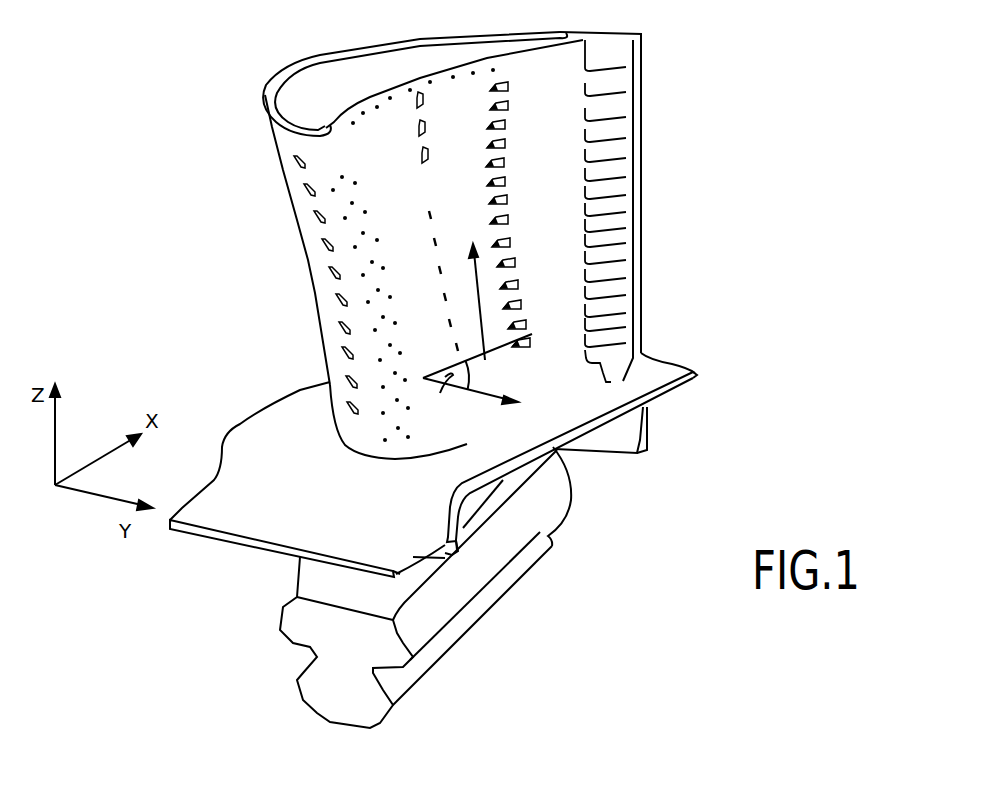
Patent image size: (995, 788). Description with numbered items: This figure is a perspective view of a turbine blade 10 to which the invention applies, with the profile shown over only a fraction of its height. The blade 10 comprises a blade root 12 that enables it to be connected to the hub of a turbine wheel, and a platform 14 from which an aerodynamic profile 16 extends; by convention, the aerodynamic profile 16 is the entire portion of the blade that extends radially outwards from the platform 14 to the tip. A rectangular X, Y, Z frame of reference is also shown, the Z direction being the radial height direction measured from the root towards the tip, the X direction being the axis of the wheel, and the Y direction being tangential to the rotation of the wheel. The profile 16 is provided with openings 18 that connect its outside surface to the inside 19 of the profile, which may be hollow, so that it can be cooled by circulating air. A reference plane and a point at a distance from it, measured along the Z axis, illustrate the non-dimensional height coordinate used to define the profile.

The blade 10 is at (682, 266).
The blade root 12 is at (493, 595).
The platform 14 is at (685, 375).
The aerodynamic profile 16 is at (240, 63).
The openings 18 is at (428, 186).
The inside of the profile 19 is at (328, 72).